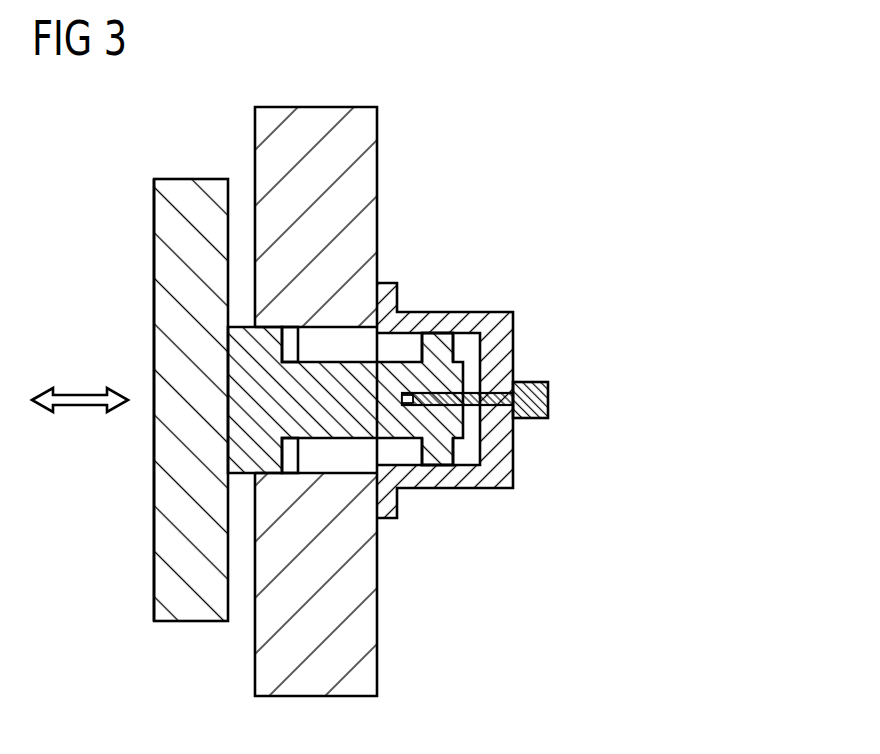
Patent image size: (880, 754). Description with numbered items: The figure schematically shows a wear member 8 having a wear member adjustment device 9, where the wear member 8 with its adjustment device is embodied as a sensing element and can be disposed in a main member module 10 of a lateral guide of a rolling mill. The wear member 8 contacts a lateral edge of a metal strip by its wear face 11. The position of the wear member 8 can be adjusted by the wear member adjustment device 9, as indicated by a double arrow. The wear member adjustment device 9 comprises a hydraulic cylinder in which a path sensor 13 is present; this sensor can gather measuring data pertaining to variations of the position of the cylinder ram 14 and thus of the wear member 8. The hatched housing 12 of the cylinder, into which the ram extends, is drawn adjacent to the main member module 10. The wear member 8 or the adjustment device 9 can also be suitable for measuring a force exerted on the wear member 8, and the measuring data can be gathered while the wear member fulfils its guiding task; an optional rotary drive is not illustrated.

The wear member 8 is at (189, 190).
The wear member adjustment device 9 is at (393, 387).
The main member module 10 is at (316, 114).
The wear face 11 is at (153, 291).
The housing 12 is at (495, 480).
The path sensor 13 is at (470, 400).
The cylinder ram 14 is at (433, 457).